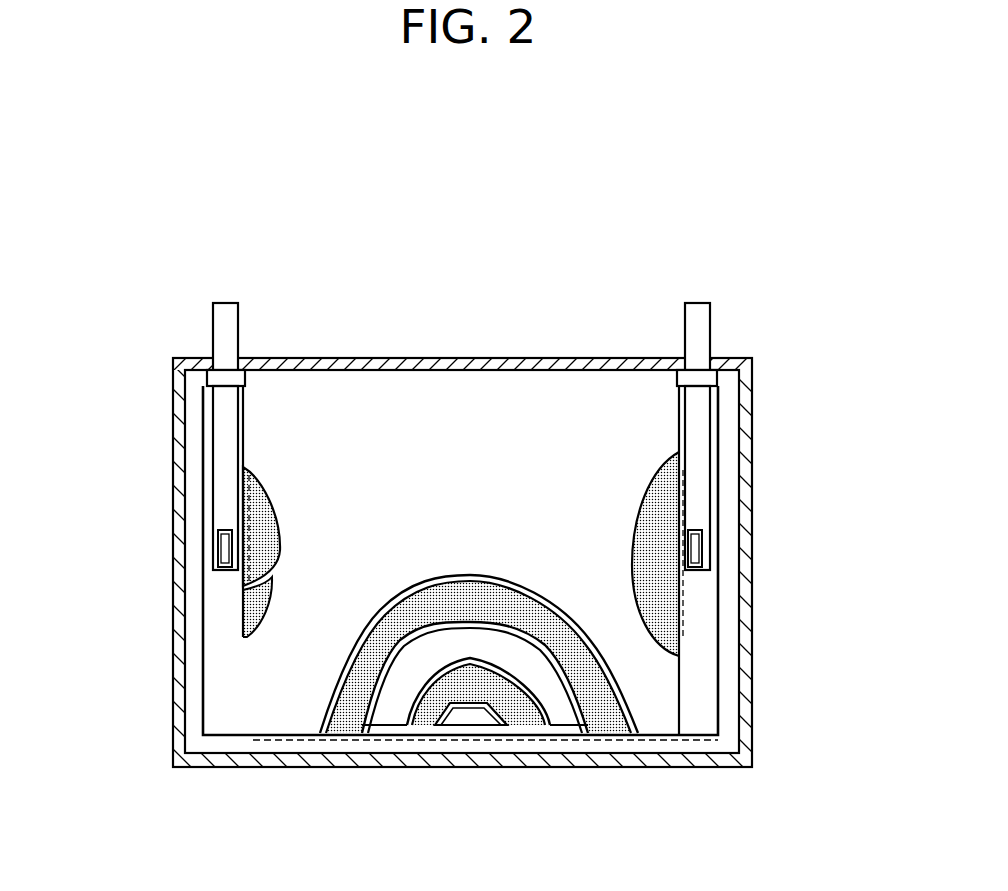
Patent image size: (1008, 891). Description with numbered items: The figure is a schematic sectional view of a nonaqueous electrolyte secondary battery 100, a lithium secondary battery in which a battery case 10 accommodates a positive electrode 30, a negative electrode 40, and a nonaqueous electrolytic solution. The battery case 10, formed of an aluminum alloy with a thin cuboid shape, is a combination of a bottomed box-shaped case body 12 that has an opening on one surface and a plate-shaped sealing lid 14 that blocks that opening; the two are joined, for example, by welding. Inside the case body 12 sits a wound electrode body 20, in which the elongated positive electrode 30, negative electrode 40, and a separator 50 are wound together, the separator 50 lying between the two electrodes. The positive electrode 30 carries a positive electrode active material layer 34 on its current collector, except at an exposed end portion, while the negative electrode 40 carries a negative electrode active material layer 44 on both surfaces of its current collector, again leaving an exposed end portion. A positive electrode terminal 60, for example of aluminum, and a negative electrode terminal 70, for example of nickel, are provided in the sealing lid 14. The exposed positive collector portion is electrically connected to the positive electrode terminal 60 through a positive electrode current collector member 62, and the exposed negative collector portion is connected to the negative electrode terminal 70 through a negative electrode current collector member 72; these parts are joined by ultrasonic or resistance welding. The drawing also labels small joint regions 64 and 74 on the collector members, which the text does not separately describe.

The nonaqueous electrolyte secondary battery 100 is at (748, 238).
The battery case 10 is at (752, 468).
The case body 12 is at (752, 568).
The sealing lid 14 is at (590, 357).
The wound electrode body 20 is at (343, 415).
The positive electrode 30 is at (430, 718).
The positive electrode active material layer 34 is at (268, 525).
The negative electrode 40 is at (243, 624).
The negative electrode active material layer 44 is at (268, 612).
The separator 50 is at (248, 592).
The positive electrode terminal 60 is at (226, 303).
The positive electrode current collector member 62 is at (225, 447).
The negative electrode tab joint 64 is at (223, 545).
The negative electrode terminal 70 is at (695, 303).
The negative electrode current collector member 72 is at (697, 440).
The positive electrode tab joint 74 is at (697, 543).